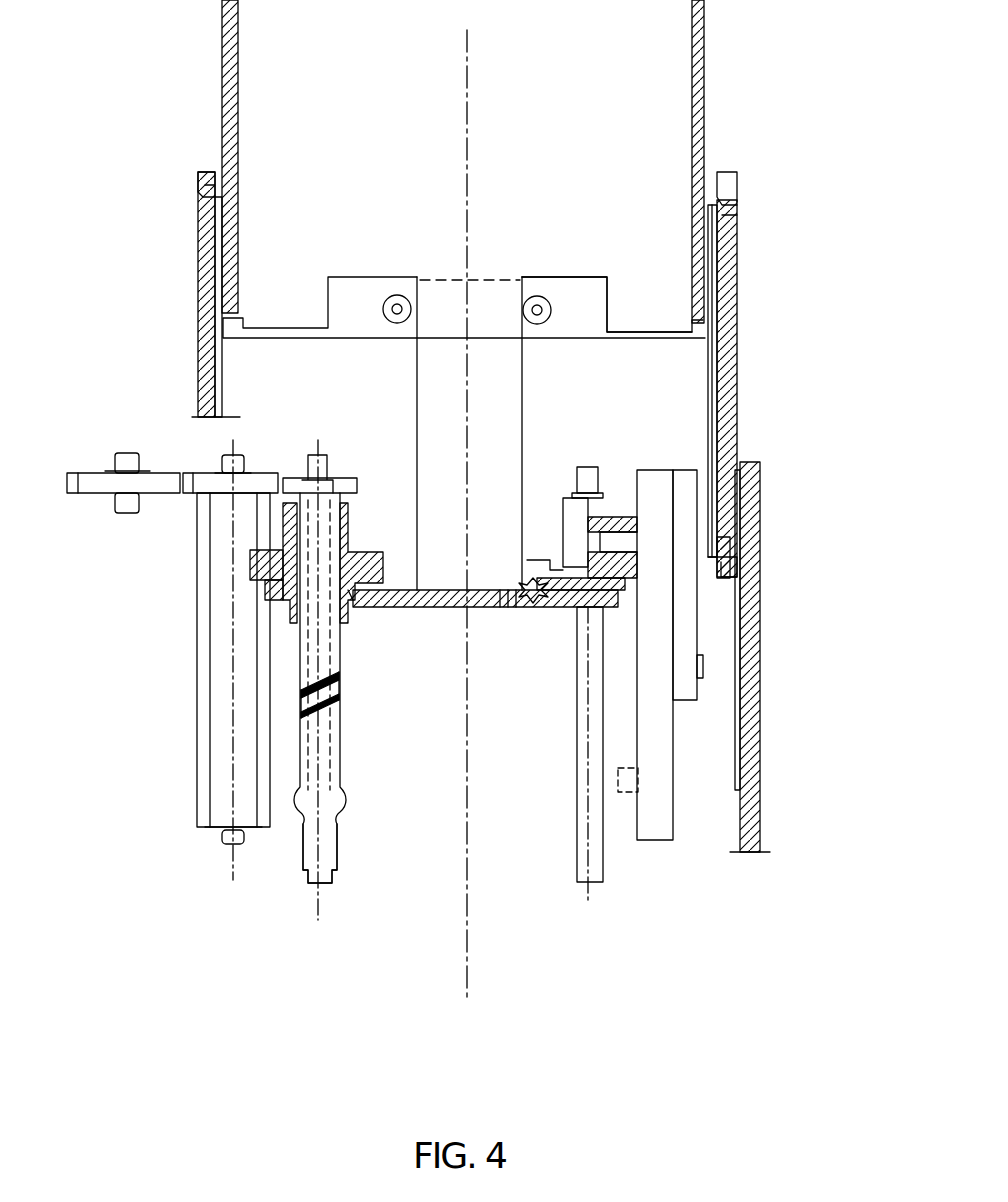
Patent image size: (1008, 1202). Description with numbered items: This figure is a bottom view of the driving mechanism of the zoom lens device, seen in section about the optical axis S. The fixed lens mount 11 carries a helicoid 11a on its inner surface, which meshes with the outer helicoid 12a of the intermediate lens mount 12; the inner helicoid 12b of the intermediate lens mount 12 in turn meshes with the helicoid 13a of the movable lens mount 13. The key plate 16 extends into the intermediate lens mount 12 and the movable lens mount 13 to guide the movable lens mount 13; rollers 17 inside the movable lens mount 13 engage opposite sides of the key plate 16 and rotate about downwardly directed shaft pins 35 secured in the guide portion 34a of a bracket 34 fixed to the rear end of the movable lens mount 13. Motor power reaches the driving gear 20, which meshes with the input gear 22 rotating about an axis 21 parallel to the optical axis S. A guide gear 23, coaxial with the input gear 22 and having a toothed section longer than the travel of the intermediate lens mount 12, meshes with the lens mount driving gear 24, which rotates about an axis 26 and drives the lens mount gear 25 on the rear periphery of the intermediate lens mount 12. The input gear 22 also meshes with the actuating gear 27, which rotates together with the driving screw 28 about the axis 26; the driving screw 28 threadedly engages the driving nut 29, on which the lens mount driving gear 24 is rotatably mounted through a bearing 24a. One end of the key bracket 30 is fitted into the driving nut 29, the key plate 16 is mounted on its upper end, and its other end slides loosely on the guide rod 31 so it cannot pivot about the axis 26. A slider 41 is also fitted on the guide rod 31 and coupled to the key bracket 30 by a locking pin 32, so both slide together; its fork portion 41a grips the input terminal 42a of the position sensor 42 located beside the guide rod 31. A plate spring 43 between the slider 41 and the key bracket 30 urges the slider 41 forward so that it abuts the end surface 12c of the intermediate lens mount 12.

The optical axis S is at (475, 72).
The fixed lens mount 11 is at (750, 705).
The helicoid 11a is at (740, 665).
The intermediate lens mount 12 is at (730, 312).
The outer helicoid 12a is at (712, 520).
The inner helicoid 12b is at (714, 402).
The end surface 12c is at (730, 575).
The movable lens mount 13 is at (702, 22).
The helicoid 13a is at (722, 236).
The key plate 16 is at (505, 428).
The rollers 17 is at (395, 304).
The driving gear 20 is at (85, 468).
The axis 21 is at (210, 728).
The input gear 22 is at (196, 473).
The guide gear 23 is at (198, 655).
The lens mount driving gear 24 is at (385, 555).
The bearing 24a is at (262, 568).
The lens mount gear 25 is at (730, 572).
The axis 26 is at (305, 855).
The actuating gear 27 is at (300, 480).
The driving screw 28 is at (340, 685).
The driving nut 29 is at (340, 600).
The key bracket 30 is at (445, 608).
The guide rod 31 is at (577, 850).
The locking pin 32 is at (541, 607).
The bracket 34 is at (296, 326).
The guide portion 34a is at (593, 283).
The shaft pins 35 is at (398, 296).
The slider 41 is at (605, 505).
The fork portion 41a is at (625, 520).
The position sensor 42 is at (673, 777).
The input terminal 42a is at (632, 540).
The plate spring 43 is at (572, 607).